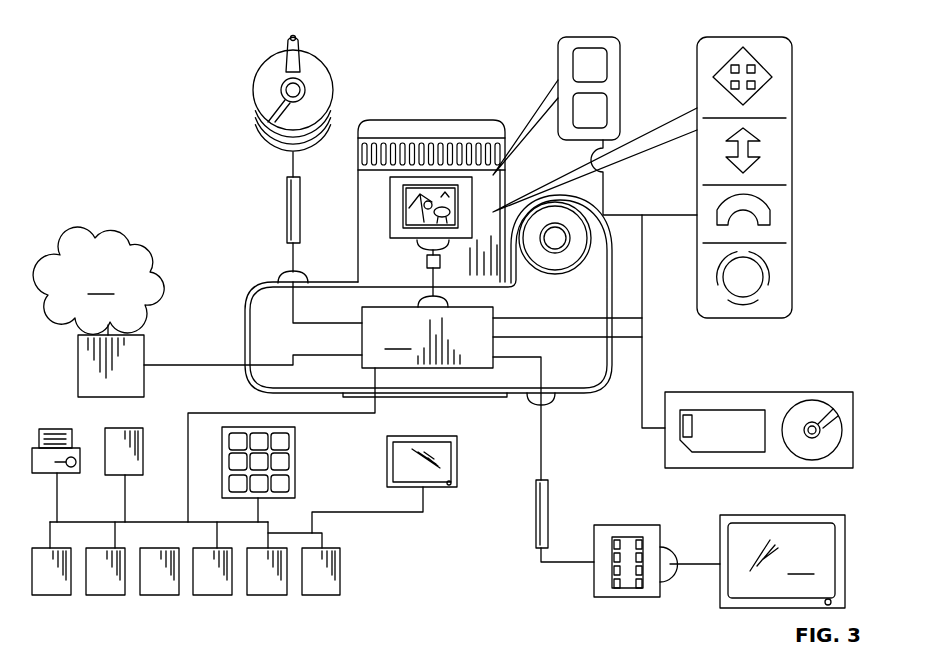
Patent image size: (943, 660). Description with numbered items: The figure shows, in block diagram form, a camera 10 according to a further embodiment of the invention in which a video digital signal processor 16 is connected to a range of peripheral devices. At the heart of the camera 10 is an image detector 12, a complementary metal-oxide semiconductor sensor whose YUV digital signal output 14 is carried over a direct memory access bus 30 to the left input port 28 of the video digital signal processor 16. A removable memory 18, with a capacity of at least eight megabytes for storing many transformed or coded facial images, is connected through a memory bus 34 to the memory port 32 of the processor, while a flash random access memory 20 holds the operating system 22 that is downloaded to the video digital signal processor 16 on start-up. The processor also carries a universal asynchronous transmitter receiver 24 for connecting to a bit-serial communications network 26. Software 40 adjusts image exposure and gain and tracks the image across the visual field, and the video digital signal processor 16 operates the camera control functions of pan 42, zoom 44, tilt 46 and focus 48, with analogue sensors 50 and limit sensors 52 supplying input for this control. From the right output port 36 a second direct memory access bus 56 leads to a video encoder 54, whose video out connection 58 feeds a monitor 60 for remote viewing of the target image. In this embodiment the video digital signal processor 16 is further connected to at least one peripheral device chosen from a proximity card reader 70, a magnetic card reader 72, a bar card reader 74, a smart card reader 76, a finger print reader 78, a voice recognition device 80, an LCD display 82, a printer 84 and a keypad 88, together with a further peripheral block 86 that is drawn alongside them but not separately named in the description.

The camera 10 is at (124, 72).
The image detector 12 is at (462, 101).
The digital signal output 14 is at (417, 246).
The video digital signal processor 16 is at (427, 337).
The removable memory 18 is at (257, 86).
The flash random access memory 20 is at (720, 392).
The operating system 22 is at (700, 416).
The universal asynchronous transmitter receiver 24 is at (144, 344).
The bit-serial communications network 26 is at (98, 280).
The left input port 28 is at (420, 300).
The direct memory access bus 30 is at (427, 262).
The memory port 32 is at (283, 272).
The memory bus 34 is at (287, 202).
The right output port 36 is at (549, 404).
The software 40 is at (790, 412).
The pan 42 is at (768, 72).
The zoom 44 is at (750, 150).
The tilt 46 is at (770, 216).
The focus 48 is at (770, 296).
The analogue sensors 50 is at (609, 66).
The limit sensors 52 is at (609, 108).
The video encoder 54 is at (593, 580).
The direct memory access bus 56 is at (549, 498).
The video out connection 58 is at (668, 578).
The monitor 60 is at (782, 561).
The proximity card reader 70 is at (42, 597).
The magnetic card reader 72 is at (152, 597).
The bar card reader 74 is at (262, 597).
The smart card reader 76 is at (207, 597).
The finger print reader 78 is at (97, 597).
The voice recognition device 80 is at (320, 597).
The LCD display 82 is at (457, 480).
The printer 84 is at (67, 474).
The storage device 86 is at (130, 476).
The keypad 88 is at (297, 480).